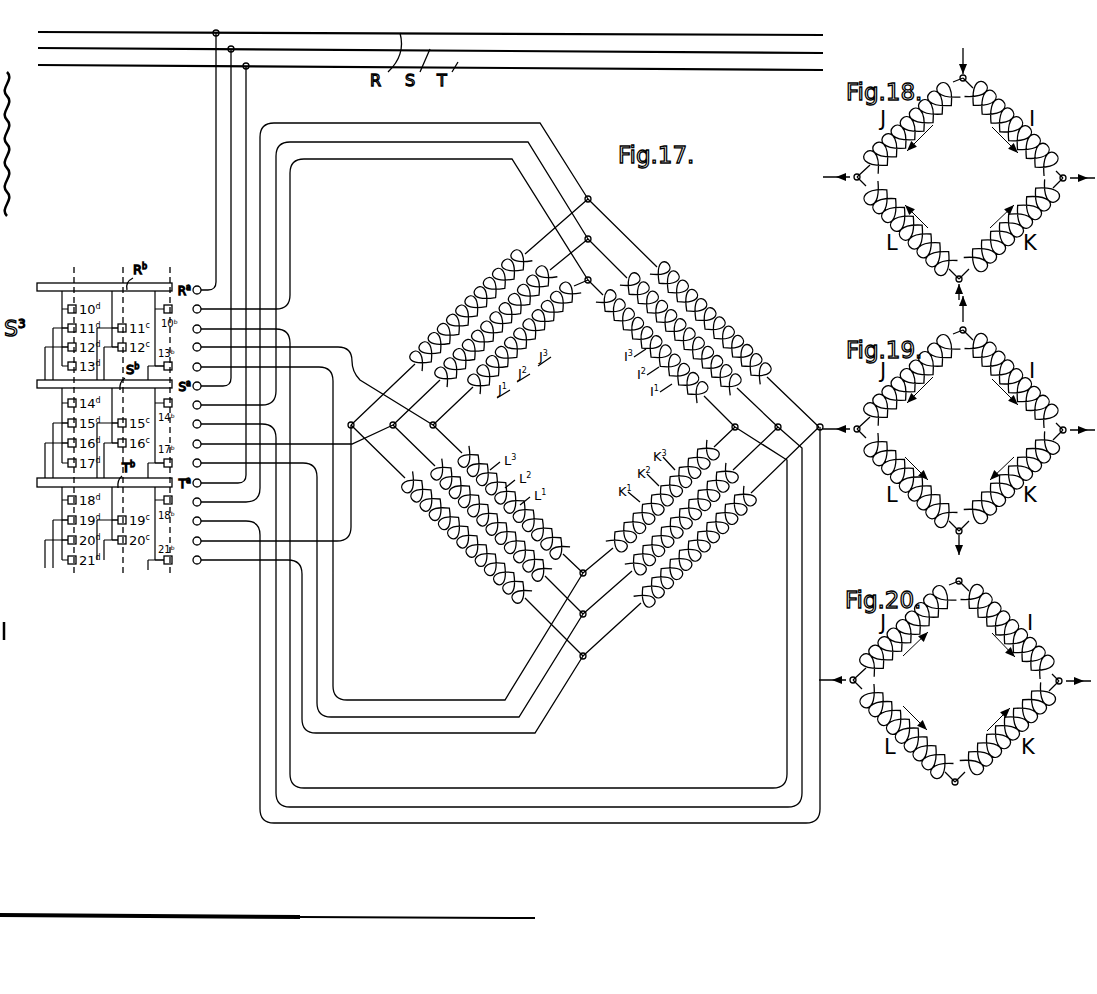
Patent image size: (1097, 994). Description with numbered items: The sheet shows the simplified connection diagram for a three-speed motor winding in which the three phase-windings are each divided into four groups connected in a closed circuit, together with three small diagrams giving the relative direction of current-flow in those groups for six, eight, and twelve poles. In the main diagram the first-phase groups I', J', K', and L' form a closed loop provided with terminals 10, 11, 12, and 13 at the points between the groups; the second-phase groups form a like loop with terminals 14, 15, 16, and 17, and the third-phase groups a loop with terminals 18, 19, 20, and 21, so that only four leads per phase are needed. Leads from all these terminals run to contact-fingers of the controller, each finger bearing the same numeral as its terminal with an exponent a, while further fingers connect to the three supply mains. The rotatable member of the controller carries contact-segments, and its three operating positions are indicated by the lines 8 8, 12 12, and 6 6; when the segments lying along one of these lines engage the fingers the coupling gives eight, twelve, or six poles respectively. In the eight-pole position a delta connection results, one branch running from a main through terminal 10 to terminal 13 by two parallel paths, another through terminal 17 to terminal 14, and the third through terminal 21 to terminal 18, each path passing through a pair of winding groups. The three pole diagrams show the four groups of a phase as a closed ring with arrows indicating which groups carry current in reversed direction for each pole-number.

In FIG. 17, the six-pole controller position line 6 is at (73, 421).
In FIG. 18, the six-pole controller position line 6 is at (959, 174).
In FIG. 17, the eight-pole controller position line 8 is at (168, 421).
In FIG. 19, the eight-pole controller position line 8 is at (959, 425).
In FIG. 17, the twelve-pole controller position line / first-phase terminal 12 is at (286, 421).
In FIG. 20, the twelve-pole controller position line / first-phase terminal 12 is at (955, 681).
In FIG. 17, the first-phase winding terminal 10 is at (393, 238).
In FIG. 17, the first-phase winding terminal 11 is at (479, 555).
In FIG. 17, the first-phase winding terminal 13 is at (390, 530).
In FIG. 17, the second-phase winding terminal 14 is at (393, 277).
In FIG. 17, the second-phase winding terminal 15 is at (486, 612).
In FIG. 17, the second-phase winding terminal 16 is at (295, 434).
In FIG. 17, the second-phase winding terminal 17 is at (390, 586).
In FIG. 17, the third-phase winding terminal 18 is at (393, 316).
In FIG. 17, the third-phase winding terminal 19 is at (497, 621).
In FIG. 17, the third-phase winding terminal 20 is at (274, 483).
In FIG. 17, the third-phase winding terminal 21 is at (390, 643).